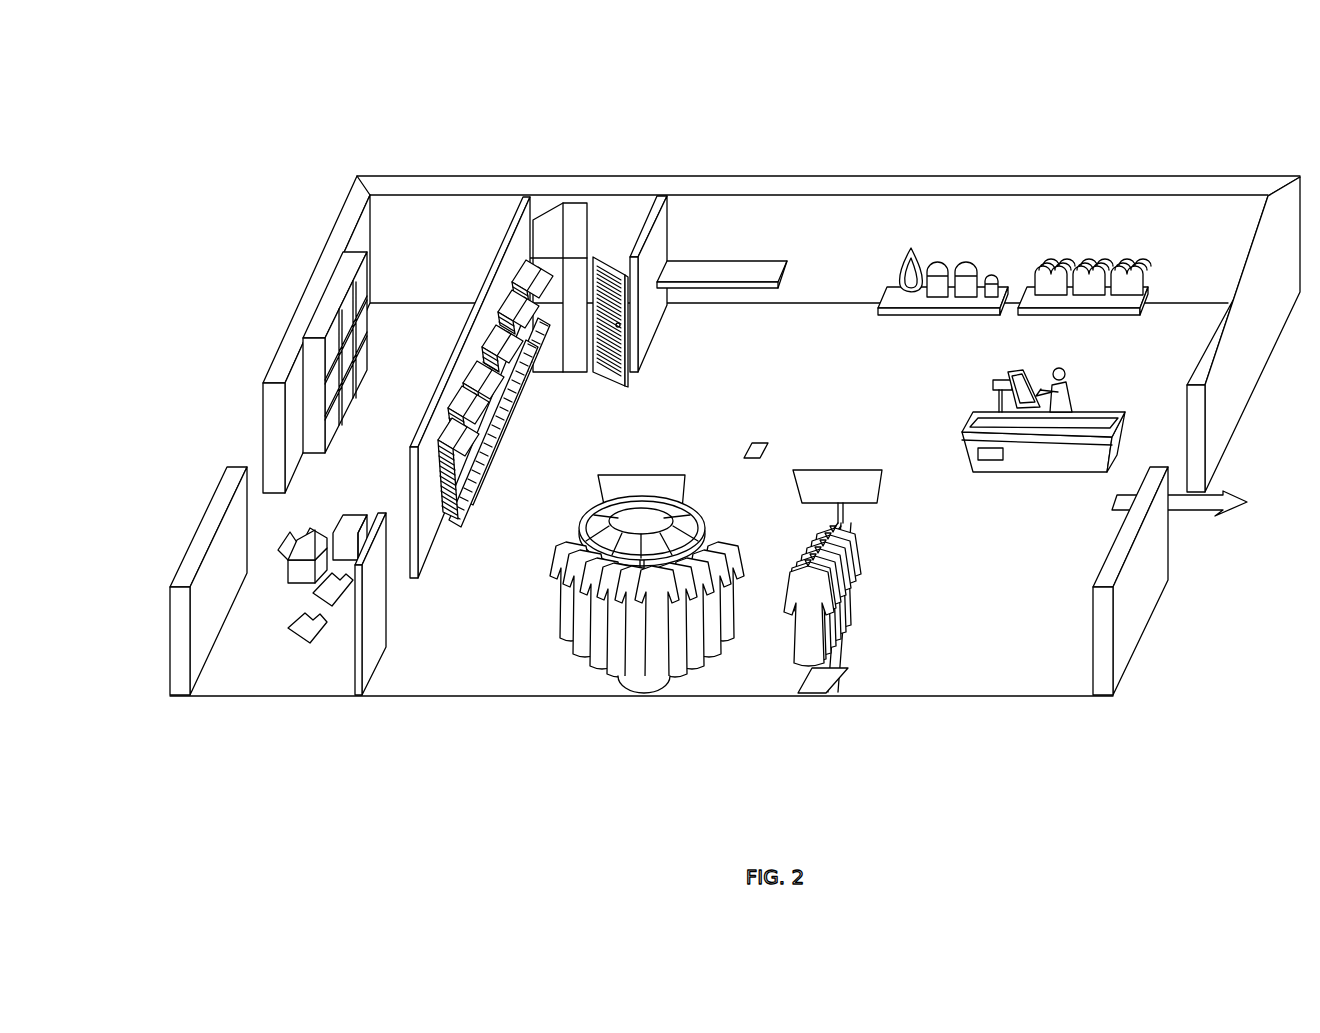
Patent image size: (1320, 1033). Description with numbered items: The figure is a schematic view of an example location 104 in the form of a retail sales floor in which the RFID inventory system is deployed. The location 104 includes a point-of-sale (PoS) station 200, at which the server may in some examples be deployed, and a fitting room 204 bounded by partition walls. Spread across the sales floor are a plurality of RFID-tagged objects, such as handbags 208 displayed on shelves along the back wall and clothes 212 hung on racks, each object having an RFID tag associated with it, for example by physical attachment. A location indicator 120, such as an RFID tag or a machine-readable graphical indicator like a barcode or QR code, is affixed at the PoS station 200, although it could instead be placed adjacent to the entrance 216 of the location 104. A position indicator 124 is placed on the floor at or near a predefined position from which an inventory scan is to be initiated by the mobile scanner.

The location 104 is at (693, 110).
The fitting room 204 is at (624, 228).
The handbags 208 is at (932, 248).
The point-of-sale (PoS) station 200 is at (1026, 425).
The position indicator 124 is at (757, 443).
The location indicator 120 is at (990, 462).
The clothes 212 is at (703, 690).
The entrance 216 is at (1185, 527).